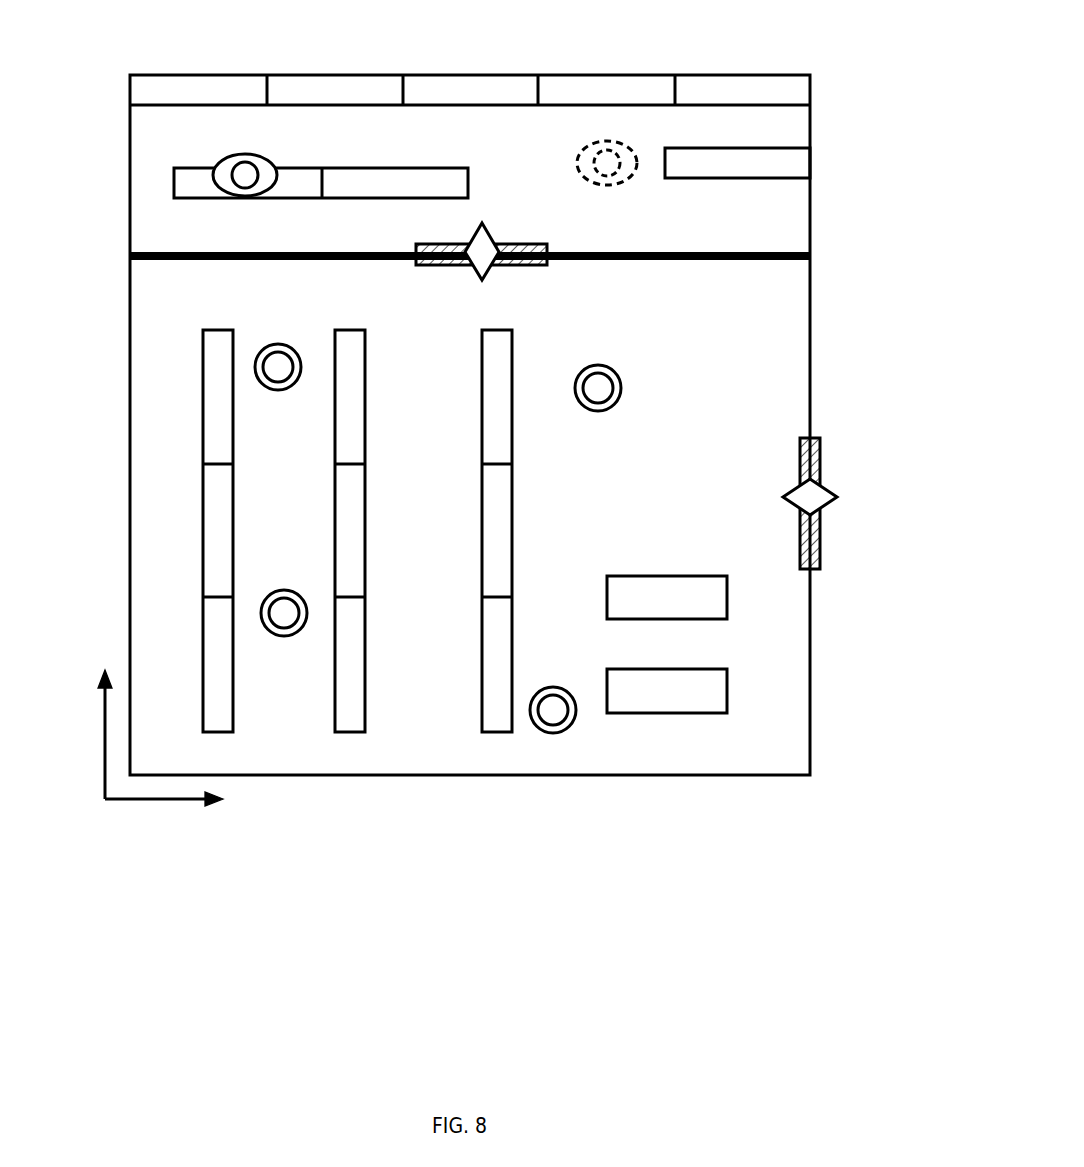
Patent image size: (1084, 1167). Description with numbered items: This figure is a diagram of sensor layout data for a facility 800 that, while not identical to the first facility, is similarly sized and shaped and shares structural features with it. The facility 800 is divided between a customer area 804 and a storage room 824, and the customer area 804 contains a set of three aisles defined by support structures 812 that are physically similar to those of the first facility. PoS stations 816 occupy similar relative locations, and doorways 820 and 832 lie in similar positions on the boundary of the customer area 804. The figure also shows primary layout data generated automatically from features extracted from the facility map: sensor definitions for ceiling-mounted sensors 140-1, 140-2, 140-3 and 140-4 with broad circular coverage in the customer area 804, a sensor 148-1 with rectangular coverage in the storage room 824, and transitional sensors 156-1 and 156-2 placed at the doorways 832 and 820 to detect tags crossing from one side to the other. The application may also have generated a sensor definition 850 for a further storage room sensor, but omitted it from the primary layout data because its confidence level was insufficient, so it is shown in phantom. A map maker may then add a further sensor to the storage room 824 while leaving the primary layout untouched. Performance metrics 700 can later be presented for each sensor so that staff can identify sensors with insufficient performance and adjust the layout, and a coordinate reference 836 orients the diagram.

The facility 800 is at (830, 313).
The storage room 824 is at (713, 232).
The customer area 804 is at (733, 359).
The sensor 148-1 is at (213, 172).
The sensor definition 850 is at (607, 141).
The doorway 832 is at (523, 266).
The transitional sensor 156-1 is at (472, 274).
The support structures 812 is at (203, 495).
The performance metrics 700 is at (420, 547).
The sensor 140-1 is at (278, 344).
The sensor 140-2 is at (285, 590).
The sensor 140-3 is at (598, 411).
The sensor 140-4 is at (552, 687).
The PoS stations 816 is at (685, 611).
The doorway 820 is at (822, 455).
The transitional sensor 156-2 is at (836, 498).
The coordinate axes 836 is at (105, 800).